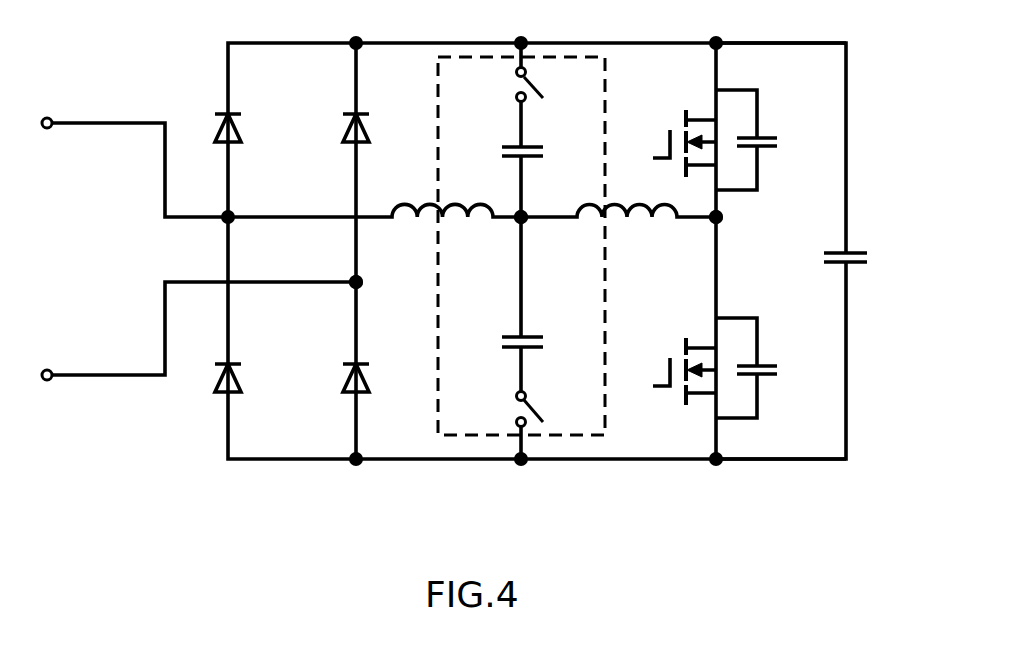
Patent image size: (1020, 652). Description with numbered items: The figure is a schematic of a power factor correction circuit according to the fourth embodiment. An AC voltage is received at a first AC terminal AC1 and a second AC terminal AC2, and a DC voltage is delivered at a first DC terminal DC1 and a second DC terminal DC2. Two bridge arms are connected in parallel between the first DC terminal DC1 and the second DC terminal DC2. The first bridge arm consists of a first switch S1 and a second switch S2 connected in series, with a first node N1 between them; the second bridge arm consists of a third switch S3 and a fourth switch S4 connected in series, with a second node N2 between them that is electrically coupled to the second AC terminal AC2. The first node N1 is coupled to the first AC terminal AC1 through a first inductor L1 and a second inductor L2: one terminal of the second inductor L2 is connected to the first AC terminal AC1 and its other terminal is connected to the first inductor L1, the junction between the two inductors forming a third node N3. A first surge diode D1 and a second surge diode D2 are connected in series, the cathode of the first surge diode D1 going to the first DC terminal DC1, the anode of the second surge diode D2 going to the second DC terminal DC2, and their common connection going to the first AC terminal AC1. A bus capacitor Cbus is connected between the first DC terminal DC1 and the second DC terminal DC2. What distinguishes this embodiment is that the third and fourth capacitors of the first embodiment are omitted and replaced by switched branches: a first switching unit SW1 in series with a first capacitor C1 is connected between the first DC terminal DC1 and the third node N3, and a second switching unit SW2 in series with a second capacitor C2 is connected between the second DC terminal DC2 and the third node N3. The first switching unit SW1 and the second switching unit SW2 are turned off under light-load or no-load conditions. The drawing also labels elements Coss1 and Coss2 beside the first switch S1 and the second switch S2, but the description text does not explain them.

The first AC terminal AC1 is at (135, 150).
The second AC terminal AC2 is at (199, 331).
The first surge diode D1 is at (212, 113).
The second surge diode D2 is at (211, 396).
The third switch S3 is at (374, 132).
The fourth switch S4 is at (374, 381).
The first node N1 is at (738, 235).
The second node N2 is at (378, 286).
The third node N3 is at (541, 236).
The first inductor L1 is at (618, 231).
The second inductor L2 is at (374, 230).
The first capacitor C1 is at (541, 172).
The second capacitor C2 is at (541, 282).
The first switching unit SW1 is at (563, 95).
The second switching unit SW2 is at (563, 403).
The first switch S1 is at (673, 143).
The second switch S2 is at (673, 371).
The output capacitance of first switch Coss1 is at (778, 140).
The output capacitance of second switch Coss2 is at (778, 368).
The bus capacitor Cbus is at (869, 277).
The first DC terminal DC1 is at (781, 63).
The second DC terminal DC2 is at (781, 446).